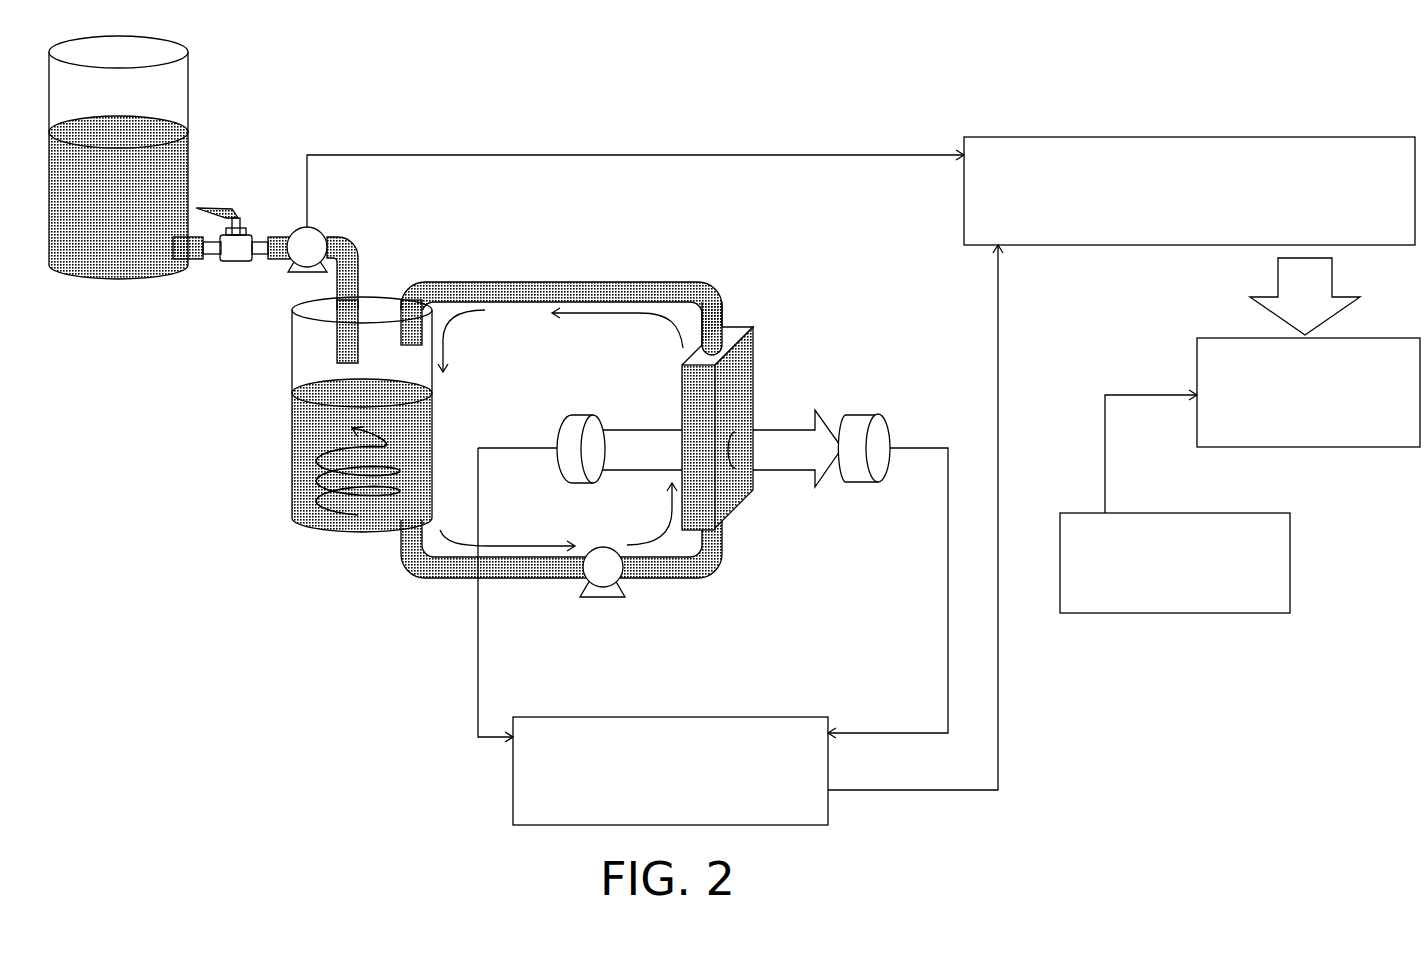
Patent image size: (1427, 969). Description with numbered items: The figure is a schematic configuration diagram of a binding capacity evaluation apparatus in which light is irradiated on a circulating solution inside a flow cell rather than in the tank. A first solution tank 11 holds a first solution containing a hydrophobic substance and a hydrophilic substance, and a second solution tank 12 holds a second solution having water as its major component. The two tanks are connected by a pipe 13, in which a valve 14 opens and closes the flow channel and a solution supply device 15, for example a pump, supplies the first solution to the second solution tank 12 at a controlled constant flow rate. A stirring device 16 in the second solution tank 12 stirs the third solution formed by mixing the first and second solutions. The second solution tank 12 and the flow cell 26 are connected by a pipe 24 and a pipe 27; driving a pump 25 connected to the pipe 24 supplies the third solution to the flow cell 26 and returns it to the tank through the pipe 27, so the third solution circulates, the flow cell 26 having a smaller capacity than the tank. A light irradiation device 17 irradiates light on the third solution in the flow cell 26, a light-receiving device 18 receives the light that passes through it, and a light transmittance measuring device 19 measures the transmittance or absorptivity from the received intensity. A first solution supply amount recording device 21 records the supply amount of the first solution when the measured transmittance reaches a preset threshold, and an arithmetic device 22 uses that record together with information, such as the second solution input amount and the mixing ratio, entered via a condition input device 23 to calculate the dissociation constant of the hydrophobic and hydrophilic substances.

The first solution tank 11 is at (188, 88).
The second solution tank 12 is at (292, 355).
The pipe 13 is at (353, 242).
The valve 14 is at (238, 262).
The solution supply device 15 is at (297, 226).
The stirring device 16 is at (358, 516).
The light irradiation device 17 is at (570, 432).
The light-receiving device 18 is at (858, 419).
The light transmittance measuring device 19 is at (707, 717).
The first solution supply amount recording device 21 is at (1182, 137).
The arithmetic device 22 is at (1197, 368).
The condition input device 23 is at (1173, 613).
The pipe 24 is at (539, 579).
The pump 25 is at (603, 597).
The flow cell 26 is at (755, 372).
The pipe 27 is at (563, 282).